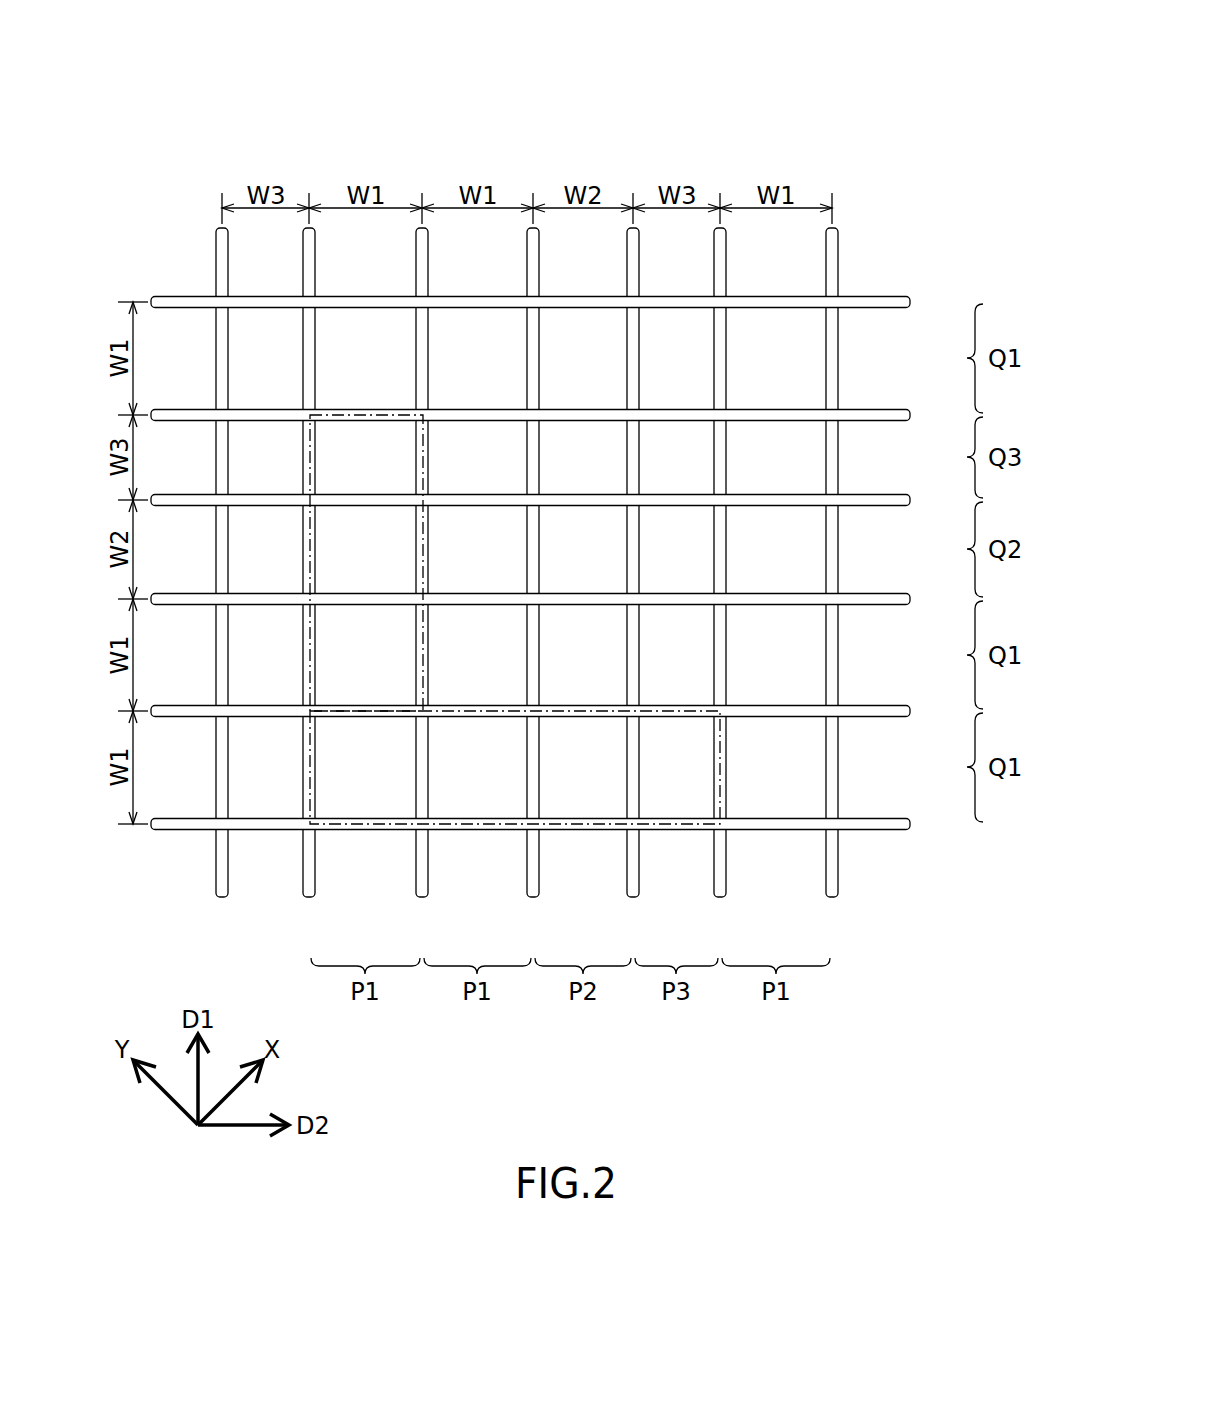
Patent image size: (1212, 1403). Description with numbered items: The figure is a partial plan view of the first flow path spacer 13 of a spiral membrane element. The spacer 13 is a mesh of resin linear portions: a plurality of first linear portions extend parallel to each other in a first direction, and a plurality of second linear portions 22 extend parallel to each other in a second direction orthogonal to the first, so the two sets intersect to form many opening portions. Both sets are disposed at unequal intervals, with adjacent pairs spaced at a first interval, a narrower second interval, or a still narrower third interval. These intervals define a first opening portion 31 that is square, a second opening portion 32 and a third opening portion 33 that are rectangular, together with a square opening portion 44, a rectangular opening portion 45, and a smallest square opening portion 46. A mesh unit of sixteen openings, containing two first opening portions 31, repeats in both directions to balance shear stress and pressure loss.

The first flow path spacer 13 is at (874, 124).
The second linear portion 22 is at (910, 302).
The first opening portion 31 is at (349, 668).
The second opening portion 32 is at (349, 562).
The third opening portion 33 is at (349, 473).
The opening portion 44 is at (568, 562).
The opening portion 45 is at (568, 473).
The opening portion 46 is at (661, 473).